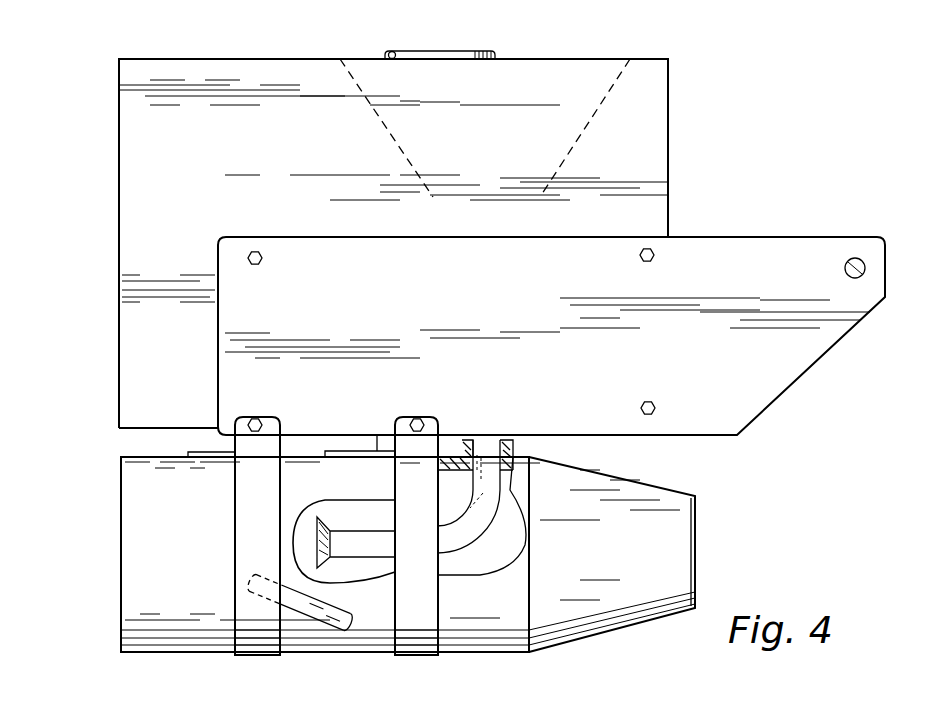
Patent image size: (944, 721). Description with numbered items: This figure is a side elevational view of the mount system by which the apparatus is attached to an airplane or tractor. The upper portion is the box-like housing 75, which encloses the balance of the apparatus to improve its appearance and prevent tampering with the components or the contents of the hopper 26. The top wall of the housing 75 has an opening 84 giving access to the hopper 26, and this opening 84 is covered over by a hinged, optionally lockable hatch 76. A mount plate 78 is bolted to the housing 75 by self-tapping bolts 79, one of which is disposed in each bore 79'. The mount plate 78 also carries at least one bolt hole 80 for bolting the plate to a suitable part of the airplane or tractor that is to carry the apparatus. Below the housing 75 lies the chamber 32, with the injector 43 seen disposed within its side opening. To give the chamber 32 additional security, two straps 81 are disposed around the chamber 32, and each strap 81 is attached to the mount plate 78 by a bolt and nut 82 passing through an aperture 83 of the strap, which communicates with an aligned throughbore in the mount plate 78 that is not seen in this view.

The housing 75 is at (195, 153).
The hopper 26 is at (388, 135).
The hatch 76 is at (440, 50).
The opening 84 is at (436, 60).
The self-tapping bolts 79 is at (451, 212).
The bore 79' is at (616, 266).
The mount plate 78 is at (420, 330).
The bolt hole 80 is at (846, 262).
The bolt and nut 82 is at (258, 417).
The aperture 83 is at (425, 417).
The chamber 32 is at (98, 547).
The injector 43 is at (322, 610).
The straps 81 is at (257, 642).